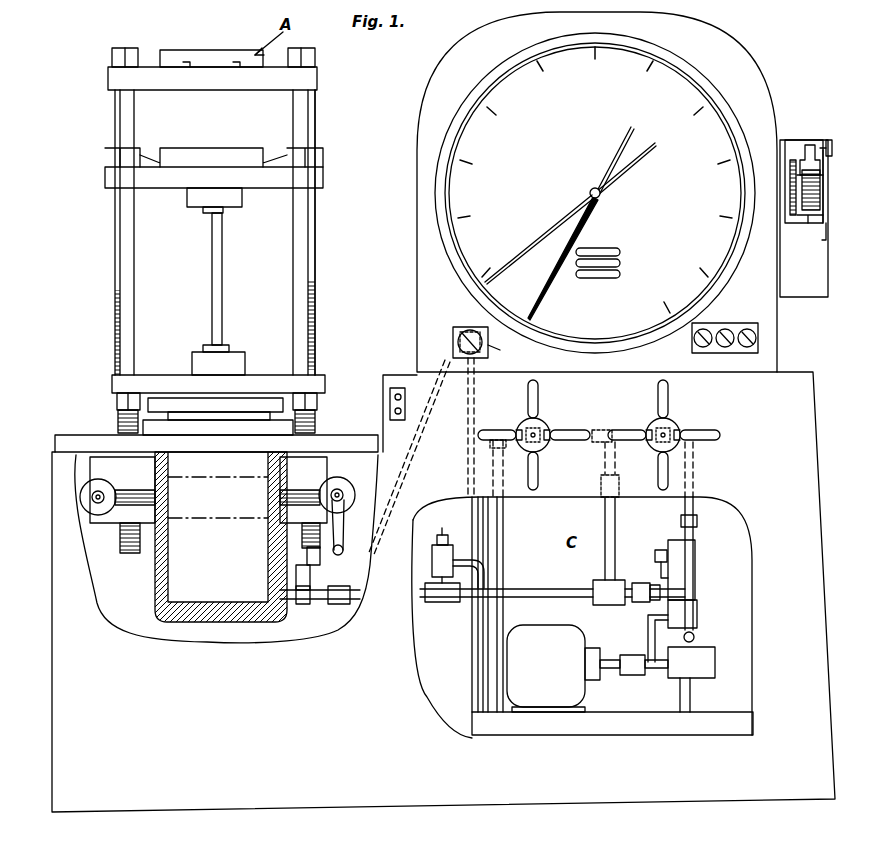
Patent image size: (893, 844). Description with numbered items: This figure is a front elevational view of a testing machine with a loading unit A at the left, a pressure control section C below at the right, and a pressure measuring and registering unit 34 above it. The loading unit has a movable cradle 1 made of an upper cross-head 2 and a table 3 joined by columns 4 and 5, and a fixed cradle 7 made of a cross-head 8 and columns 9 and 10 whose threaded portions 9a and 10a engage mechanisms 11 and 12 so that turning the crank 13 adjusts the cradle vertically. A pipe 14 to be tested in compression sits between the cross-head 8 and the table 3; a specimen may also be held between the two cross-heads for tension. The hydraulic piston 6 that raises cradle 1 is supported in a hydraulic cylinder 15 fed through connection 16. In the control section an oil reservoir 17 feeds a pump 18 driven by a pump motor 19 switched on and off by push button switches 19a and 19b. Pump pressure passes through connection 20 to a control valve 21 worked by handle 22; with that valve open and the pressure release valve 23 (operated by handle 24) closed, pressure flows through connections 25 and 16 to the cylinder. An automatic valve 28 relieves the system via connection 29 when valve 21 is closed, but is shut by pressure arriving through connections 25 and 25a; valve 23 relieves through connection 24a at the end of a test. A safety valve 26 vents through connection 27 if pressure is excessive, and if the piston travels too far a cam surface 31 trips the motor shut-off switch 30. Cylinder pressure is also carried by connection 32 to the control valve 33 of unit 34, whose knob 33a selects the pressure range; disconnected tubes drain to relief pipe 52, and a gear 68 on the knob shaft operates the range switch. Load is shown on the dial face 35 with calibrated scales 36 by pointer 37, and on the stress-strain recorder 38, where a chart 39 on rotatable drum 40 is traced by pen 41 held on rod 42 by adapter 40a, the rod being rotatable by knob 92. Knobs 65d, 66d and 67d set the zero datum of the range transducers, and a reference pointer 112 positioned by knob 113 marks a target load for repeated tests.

The cradle 1 is at (313, 120).
The upper cross-head 2 is at (318, 75).
The table 3 is at (325, 378).
The column 4 is at (134, 282).
The column 5 is at (308, 262).
The hydraulic piston 6 is at (205, 572).
The cradle 7 is at (318, 213).
The cross-head 8 is at (324, 171).
The column 9 is at (318, 311).
The threaded portion 9a is at (326, 412).
The column 10 is at (116, 298).
The threaded portion 10a is at (118, 419).
The mechanism 11 is at (117, 505).
The mechanism 12 is at (317, 502).
The crank 13 is at (335, 537).
The pipe 14 is at (222, 279).
The hydraulic cylinder 15 is at (156, 578).
The connection 16 is at (313, 596).
The oil reservoir 17 is at (634, 723).
The pump 18 is at (715, 662).
The pump motor 19 is at (554, 630).
The push button switch 19a is at (394, 397).
The push button switch 19b is at (394, 411).
The connection 20 is at (694, 549).
The control valve 21 is at (678, 424).
The handle 22 is at (668, 390).
The pressure release valve 23 is at (548, 424).
The handle 24 is at (538, 395).
The connection 24a is at (504, 521).
The connection 25 is at (616, 517).
The connection 25a is at (655, 570).
The safety valve 26 is at (432, 555).
The connection 27 is at (486, 628).
The automatic valve 28 is at (650, 598).
The connection 29 is at (648, 633).
The motor shut-off switch 30 is at (306, 549).
The cam surface 31 is at (310, 578).
The connection 32 is at (412, 462).
The control valve 33 is at (453, 341).
The knob 33a is at (510, 355).
The pressure measuring and registering unit 34 is at (712, 38).
The dial face 35 is at (595, 193).
The calibrated scales 36 is at (483, 278).
The pointer 37 is at (582, 232).
The stress-strain recorder 38 is at (802, 297).
The chart 39 is at (815, 222).
The rotatable drum 40 is at (826, 222).
The adapter 40a is at (810, 143).
The pen 41 is at (805, 223).
The rod 42 is at (790, 140).
The relief pipe 52 is at (476, 401).
The knob 65d is at (695, 348).
The knob 66d is at (725, 328).
The knob 67d is at (752, 343).
The gear 68 is at (535, 317).
The knob 92 is at (826, 140).
The pointer 112 is at (566, 228).
The knob 113 is at (600, 193).